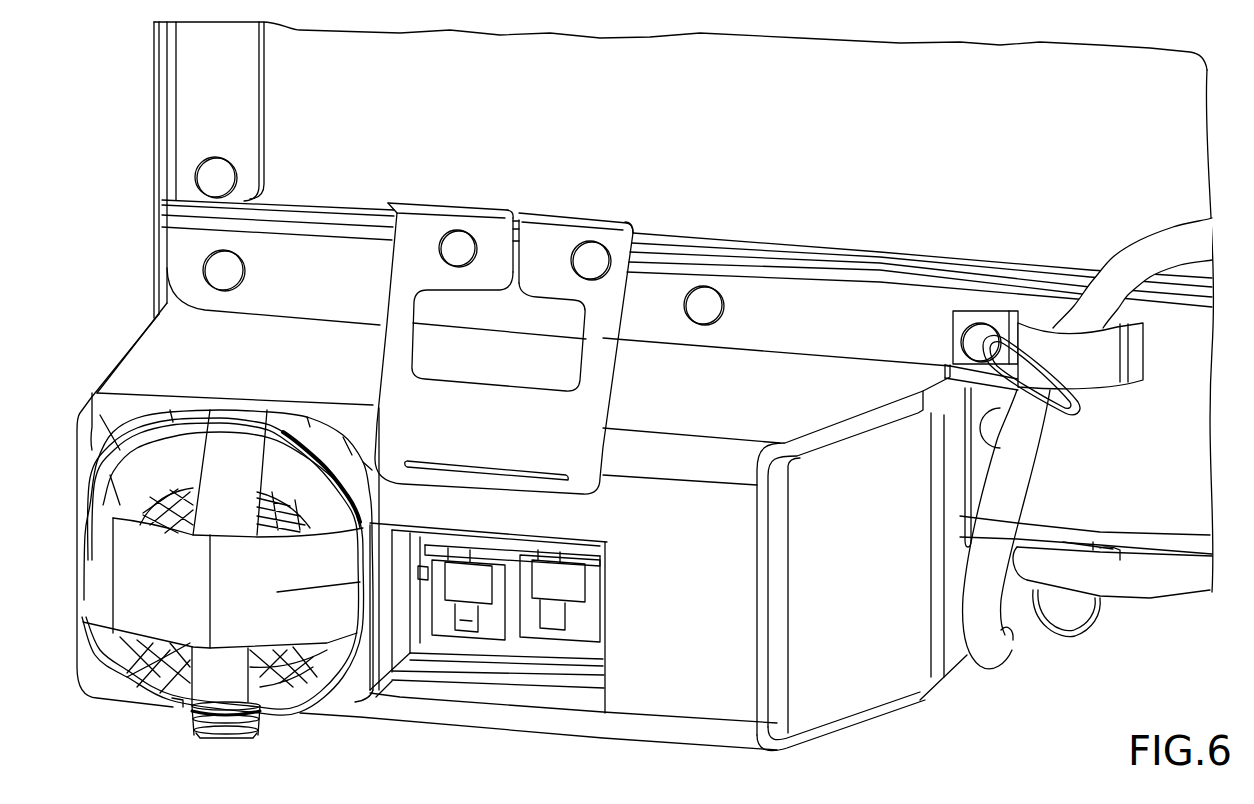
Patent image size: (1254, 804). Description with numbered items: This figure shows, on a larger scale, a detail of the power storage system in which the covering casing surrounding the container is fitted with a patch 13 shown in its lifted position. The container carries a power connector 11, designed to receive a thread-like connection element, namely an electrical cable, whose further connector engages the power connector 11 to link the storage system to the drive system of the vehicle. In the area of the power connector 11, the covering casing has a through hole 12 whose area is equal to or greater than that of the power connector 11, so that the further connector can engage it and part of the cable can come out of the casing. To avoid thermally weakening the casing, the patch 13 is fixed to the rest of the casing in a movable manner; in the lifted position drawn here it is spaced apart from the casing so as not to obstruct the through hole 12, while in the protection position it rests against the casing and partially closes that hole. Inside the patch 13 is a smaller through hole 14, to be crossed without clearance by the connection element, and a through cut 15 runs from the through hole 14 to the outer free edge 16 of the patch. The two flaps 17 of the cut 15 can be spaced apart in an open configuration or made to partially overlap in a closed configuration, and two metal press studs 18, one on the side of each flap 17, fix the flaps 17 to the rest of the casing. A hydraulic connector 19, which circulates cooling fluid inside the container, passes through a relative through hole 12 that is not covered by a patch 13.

The power connector 11 is at (485, 643).
The through hole 12 is at (403, 668).
The patch 13 is at (472, 293).
The through hole 14 is at (577, 373).
The through cut 15 is at (520, 268).
The outer free edge 16 is at (430, 204).
The flaps 17 is at (537, 230).
The metal press stud 18 is at (588, 256).
The hydraulic connector 19 is at (220, 737).